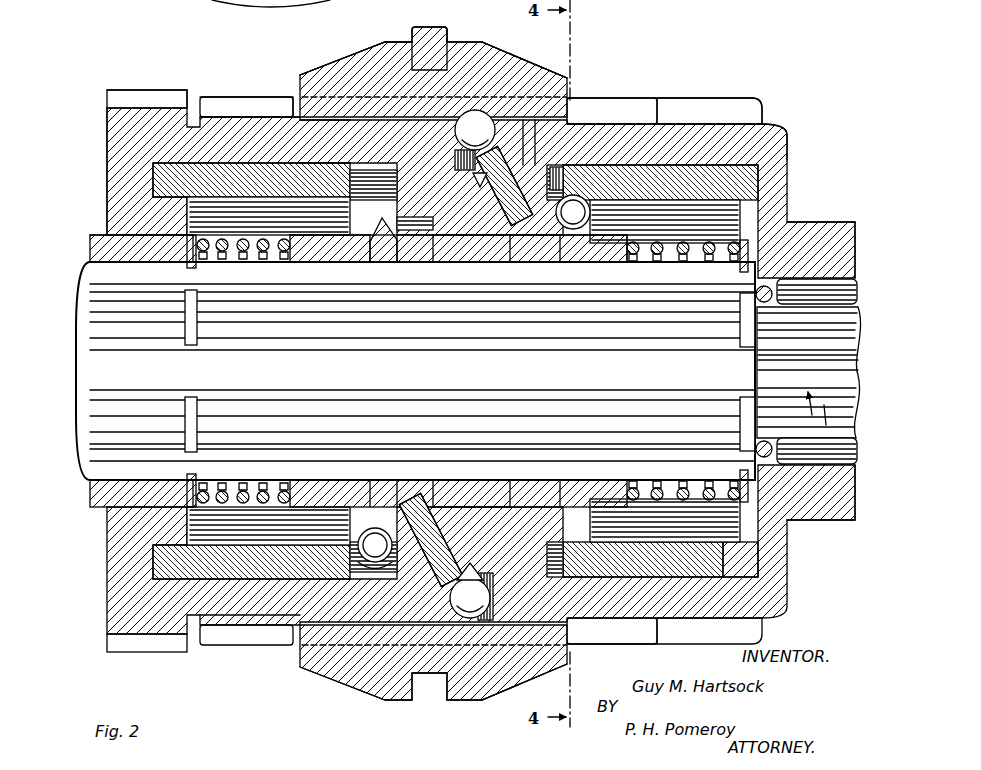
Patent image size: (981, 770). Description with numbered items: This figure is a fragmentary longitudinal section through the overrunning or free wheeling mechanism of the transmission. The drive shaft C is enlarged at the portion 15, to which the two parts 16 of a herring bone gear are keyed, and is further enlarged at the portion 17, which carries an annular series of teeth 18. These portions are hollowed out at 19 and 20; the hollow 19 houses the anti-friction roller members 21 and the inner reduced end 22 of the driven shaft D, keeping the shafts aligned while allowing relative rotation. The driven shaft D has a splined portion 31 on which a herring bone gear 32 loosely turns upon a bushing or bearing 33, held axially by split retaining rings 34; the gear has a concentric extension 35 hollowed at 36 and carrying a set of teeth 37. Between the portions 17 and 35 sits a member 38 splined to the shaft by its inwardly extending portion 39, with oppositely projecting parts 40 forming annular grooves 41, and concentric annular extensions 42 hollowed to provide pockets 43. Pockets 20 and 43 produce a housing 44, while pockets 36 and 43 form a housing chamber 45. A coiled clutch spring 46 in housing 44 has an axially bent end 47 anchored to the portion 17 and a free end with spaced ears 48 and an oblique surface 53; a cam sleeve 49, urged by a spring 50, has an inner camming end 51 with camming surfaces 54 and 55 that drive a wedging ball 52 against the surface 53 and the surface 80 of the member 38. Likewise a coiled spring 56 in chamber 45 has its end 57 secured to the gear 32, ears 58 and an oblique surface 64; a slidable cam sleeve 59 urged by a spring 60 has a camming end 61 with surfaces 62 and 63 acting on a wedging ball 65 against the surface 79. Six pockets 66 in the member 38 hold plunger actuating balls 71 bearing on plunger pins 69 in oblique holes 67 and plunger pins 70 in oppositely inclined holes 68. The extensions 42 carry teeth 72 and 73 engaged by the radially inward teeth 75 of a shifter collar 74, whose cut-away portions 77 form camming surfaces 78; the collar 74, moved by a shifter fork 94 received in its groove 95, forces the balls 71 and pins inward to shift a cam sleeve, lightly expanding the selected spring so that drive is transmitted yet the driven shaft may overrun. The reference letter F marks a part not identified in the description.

The enlarged portion of drive shaft 15 is at (830, 256).
The herring bone gear parts 16 is at (806, 291).
The enlarged portion of drive shaft 17 is at (778, 133).
The annular series of teeth 18 is at (768, 110).
The hollowed out portion 19 is at (821, 492).
The hollowed out portion 20 is at (790, 135).
The anti-friction roller members 21 is at (806, 451).
The inner reduced end of driven shaft 22 is at (808, 372).
The splined portion of driven shaft 31 is at (108, 242).
The herring bone gear 32 is at (162, 97).
The bushing or bearing 33 is at (143, 247).
The split retaining rings 34 is at (190, 257).
The concentric extension 35 is at (218, 145).
The pocket 36 is at (165, 112).
The set of teeth 37 is at (243, 97).
The member 38 is at (473, 191).
The inwardly extending portion 39 is at (425, 240).
The oppositely projecting parts 40 is at (480, 198).
The annular grooves 41 is at (500, 226).
The concentric annular extensions 42 is at (455, 168).
The pockets 43 is at (362, 182).
The housing 44 is at (706, 246).
The housing chamber 45 is at (227, 220).
The coiled clutch spring 46 is at (643, 559).
The axially bent end 47 is at (751, 559).
The spaced ears 48 is at (576, 192).
The cam sleeve 49 is at (659, 516).
The spring 50 is at (743, 256).
The inner camming end 51 is at (585, 262).
The wedging or expanding ball 52 is at (573, 212).
The oblique surface 53 is at (592, 176).
The camming surface 54 is at (535, 262).
The camming surface 55 is at (596, 262).
The coiled spring 56 is at (250, 172).
The end of coiled spring 57 is at (300, 240).
The ears 58 is at (290, 640).
The slidable cam sleeve 59 is at (305, 165).
The spring 60 is at (223, 240).
The camming end 61 is at (415, 371).
The camming surface 62 is at (390, 262).
The camming surface 63 is at (372, 262).
The oblique surface 64 is at (368, 560).
The wedging or expanding ball 65 is at (380, 585).
The pockets 66 is at (455, 160).
The holes 67 is at (523, 165).
The holes 68 is at (466, 566).
The plunger pins 69 is at (504, 186).
The plunger pins 70 is at (430, 539).
The plunger actuating balls 71 is at (472, 364).
The teeth 72 is at (626, 100).
The teeth 73 is at (322, 228).
The shifter collar 74 is at (406, 50).
The teeth 75 is at (348, 112).
The cut-away portions 77 is at (500, 108).
The camming surfaces 78 is at (392, 108).
The surface 79 is at (430, 675).
The surface 80 is at (534, 165).
The shifter fork 94 is at (428, 31).
The groove 95 is at (451, 44).
The flange section F is at (207, 92).
The drive shaft C is at (836, 222).
The driven shaft D is at (95, 480).